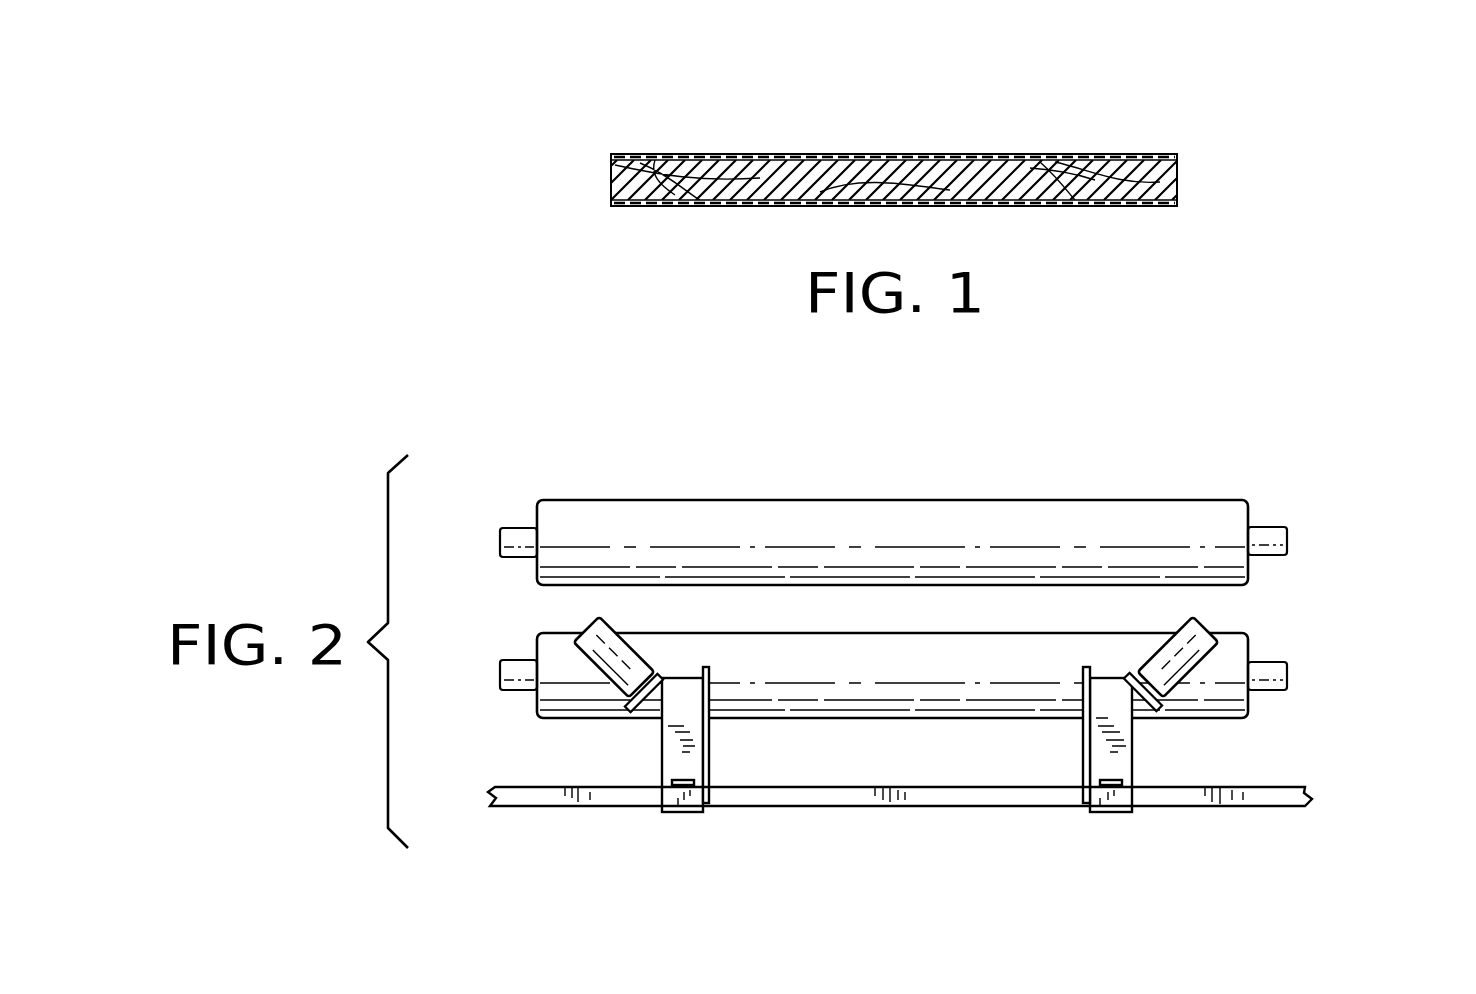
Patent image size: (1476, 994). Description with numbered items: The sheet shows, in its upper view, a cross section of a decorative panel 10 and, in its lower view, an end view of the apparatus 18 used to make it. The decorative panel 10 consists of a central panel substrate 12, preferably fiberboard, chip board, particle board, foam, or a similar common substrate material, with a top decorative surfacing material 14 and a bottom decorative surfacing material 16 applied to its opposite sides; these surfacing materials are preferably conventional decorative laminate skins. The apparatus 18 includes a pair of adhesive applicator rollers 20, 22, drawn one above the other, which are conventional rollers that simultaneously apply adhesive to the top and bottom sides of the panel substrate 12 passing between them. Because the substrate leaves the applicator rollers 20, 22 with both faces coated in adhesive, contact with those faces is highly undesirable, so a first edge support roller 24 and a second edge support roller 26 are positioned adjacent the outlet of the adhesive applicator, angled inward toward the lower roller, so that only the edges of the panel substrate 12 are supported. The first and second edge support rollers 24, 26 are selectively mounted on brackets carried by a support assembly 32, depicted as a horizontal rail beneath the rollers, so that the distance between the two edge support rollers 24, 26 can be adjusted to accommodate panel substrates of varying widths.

In FIG. 1, the decorative panel 10 is at (750, 128).
In FIG. 1, the panel substrate 12 is at (610, 180).
In FIG. 1, the top decorative surfacing material 14 is at (610, 156).
In FIG. 1, the bottom decorative surfacing material 16 is at (1163, 207).
In FIG. 2, the apparatus 18 is at (1330, 556).
In FIG. 2, the adhesive applicator roller 20 is at (555, 500).
In FIG. 2, the adhesive applicator roller 22 is at (538, 710).
In FIG. 2, the first edge support roller 24 is at (590, 627).
In FIG. 2, the second edge support roller 26 is at (1208, 622).
In FIG. 2, the support assembly 32 is at (783, 800).